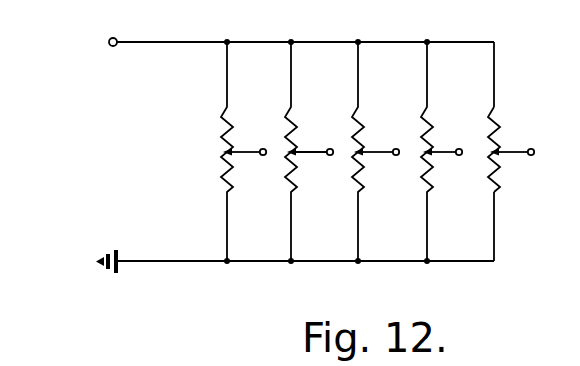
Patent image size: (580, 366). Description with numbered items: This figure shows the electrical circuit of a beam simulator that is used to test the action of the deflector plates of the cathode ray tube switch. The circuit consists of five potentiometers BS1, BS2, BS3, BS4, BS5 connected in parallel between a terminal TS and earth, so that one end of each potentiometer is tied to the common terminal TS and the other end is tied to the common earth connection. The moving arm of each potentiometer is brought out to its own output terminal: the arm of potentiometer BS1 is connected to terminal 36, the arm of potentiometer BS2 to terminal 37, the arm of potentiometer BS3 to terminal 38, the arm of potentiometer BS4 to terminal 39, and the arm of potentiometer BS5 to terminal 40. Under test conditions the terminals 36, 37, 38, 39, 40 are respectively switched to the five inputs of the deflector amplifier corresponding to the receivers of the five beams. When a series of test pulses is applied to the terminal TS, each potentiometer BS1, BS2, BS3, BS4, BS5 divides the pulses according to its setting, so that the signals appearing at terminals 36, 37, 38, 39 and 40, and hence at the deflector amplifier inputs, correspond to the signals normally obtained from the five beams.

The terminal TS is at (108, 29).
The potentiometer BS1 is at (229, 171).
The potentiometer BS2 is at (294, 171).
The potentiometer BS3 is at (361, 171).
The potentiometer BS4 is at (430, 171).
The potentiometer BS5 is at (497, 171).
The terminal 36 is at (263, 148).
The terminal 37 is at (330, 148).
The terminal 38 is at (396, 148).
The terminal 39 is at (459, 148).
The terminal 40 is at (531, 148).